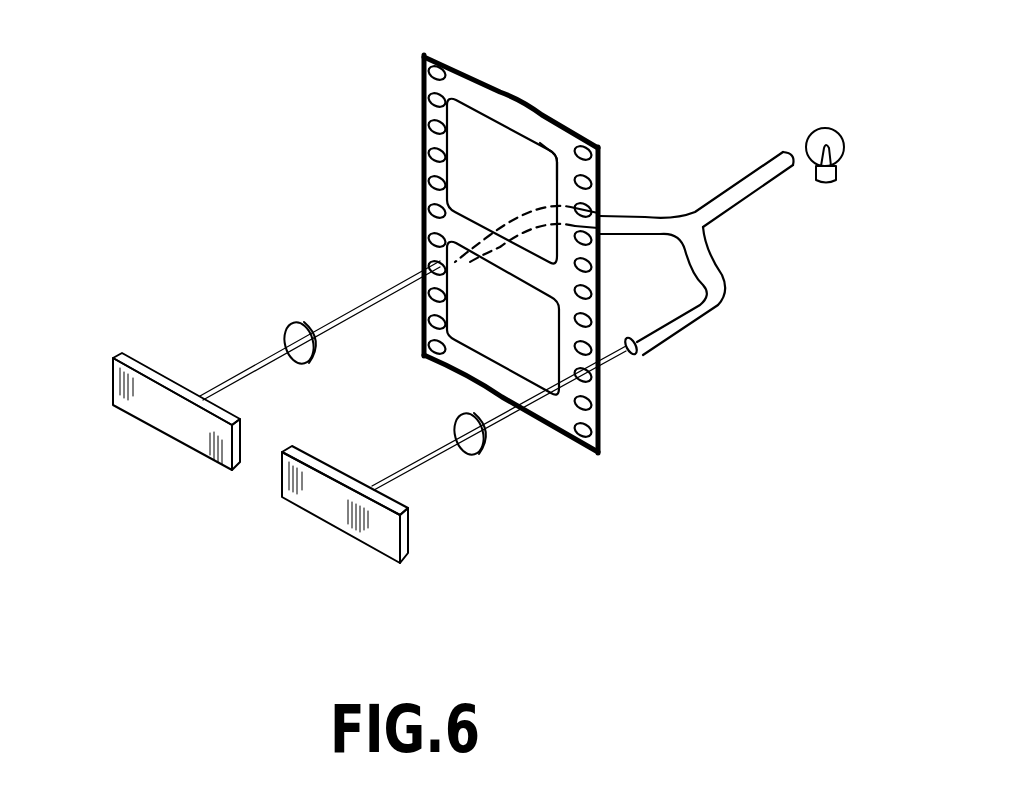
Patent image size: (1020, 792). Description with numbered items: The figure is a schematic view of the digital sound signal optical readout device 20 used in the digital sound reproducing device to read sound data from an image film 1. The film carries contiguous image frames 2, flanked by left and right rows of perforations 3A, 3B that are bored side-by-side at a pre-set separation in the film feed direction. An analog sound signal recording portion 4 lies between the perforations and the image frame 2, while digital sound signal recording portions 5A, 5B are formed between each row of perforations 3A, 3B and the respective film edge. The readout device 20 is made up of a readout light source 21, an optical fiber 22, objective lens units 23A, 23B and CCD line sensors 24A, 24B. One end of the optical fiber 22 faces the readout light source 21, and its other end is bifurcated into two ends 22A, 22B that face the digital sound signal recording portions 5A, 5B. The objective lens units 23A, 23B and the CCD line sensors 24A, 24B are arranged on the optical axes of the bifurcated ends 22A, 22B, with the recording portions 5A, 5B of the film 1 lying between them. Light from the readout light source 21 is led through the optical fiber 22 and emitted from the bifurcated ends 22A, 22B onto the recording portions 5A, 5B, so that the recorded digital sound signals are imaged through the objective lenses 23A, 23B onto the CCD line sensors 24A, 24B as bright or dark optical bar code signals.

The image film 1 is at (423, 72).
The image frame 2 is at (487, 157).
The perforations 3A is at (586, 145).
The perforations 3B is at (443, 63).
The analog sound signal recording portion 4 is at (540, 165).
The digital sound signal recording portion 5A is at (603, 188).
The digital sound signal recording portion 5B is at (423, 152).
The digital sound signal optical readout device 20 is at (720, 428).
The readout light source 21 is at (845, 153).
The optical fiber 22 is at (737, 200).
The bifurcated end 22A is at (652, 350).
The bifurcated end 22B is at (418, 215).
The objective lens unit 23A is at (486, 456).
The objective lens unit 23B is at (294, 322).
The CCD line sensor 24A is at (297, 503).
The CCD line sensor 24B is at (143, 423).